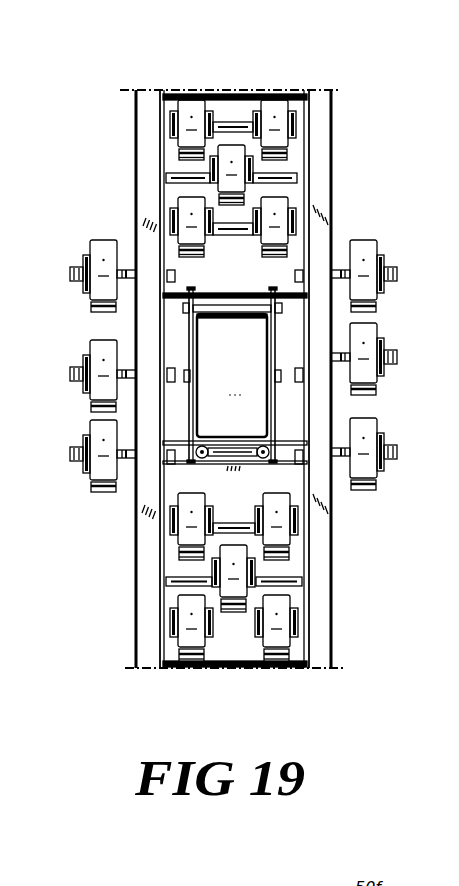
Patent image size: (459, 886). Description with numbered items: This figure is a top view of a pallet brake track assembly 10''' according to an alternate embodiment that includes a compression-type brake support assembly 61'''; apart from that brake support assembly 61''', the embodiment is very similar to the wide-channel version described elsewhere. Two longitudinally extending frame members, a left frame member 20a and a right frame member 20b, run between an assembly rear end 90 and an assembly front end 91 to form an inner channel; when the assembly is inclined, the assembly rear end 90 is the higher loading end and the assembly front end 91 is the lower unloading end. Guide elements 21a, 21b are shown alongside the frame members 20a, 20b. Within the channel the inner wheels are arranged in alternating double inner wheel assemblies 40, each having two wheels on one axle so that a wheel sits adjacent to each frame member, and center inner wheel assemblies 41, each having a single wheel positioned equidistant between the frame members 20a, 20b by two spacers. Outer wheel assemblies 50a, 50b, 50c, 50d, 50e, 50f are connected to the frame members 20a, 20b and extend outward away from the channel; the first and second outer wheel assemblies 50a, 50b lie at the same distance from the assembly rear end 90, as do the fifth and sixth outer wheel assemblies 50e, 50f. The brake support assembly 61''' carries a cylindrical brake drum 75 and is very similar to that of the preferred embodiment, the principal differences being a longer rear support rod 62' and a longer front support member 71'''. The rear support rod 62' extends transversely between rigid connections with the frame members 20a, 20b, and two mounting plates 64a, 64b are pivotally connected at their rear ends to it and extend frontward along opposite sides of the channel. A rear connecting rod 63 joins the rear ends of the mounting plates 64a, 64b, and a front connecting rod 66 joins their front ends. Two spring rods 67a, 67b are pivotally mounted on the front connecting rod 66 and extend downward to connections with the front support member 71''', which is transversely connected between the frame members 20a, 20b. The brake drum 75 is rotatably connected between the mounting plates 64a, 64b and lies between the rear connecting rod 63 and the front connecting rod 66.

The pallet brake track assembly 10''' is at (253, 345).
The assembly rear end 90 is at (148, 80).
The assembly front end 91 is at (314, 680).
The left frame member 20a is at (130, 102).
The right frame member 20b is at (334, 102).
The left guide rail 21a is at (147, 137).
The right guide rail 21b is at (318, 131).
The double inner wheel assembly 40 is at (214, 113).
The center inner wheel assembly 41 is at (210, 160).
The outer wheel assembly 50a is at (390, 264).
The outer wheel assembly 50b is at (81, 259).
The outer wheel assembly 50c is at (396, 346).
The outer wheel assembly 50d is at (79, 365).
The outer wheel assembly 50e is at (396, 466).
The outer wheel assembly 50f is at (79, 444).
The compression-type brake support assembly 61''' is at (181, 400).
The rear support rod 62' is at (276, 237).
The rear connecting rod 63 is at (320, 297).
The mounting plate 64a is at (183, 345).
The mounting plate 64b is at (277, 404).
The front connecting rod 66 is at (247, 466).
The spring rod 67a is at (197, 468).
The spring rod 67b is at (270, 462).
The front support member 71''' is at (298, 441).
The brake drum 75 is at (249, 351).